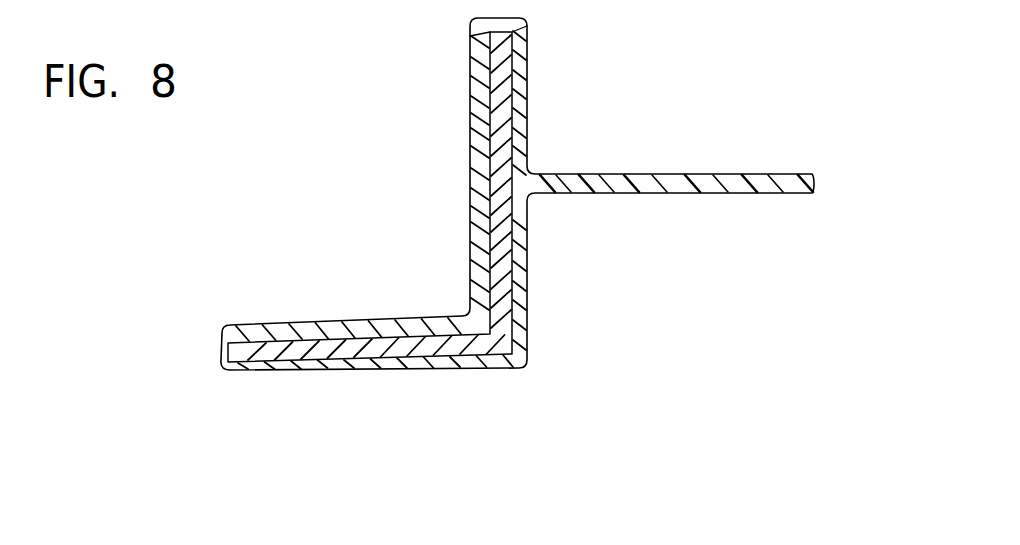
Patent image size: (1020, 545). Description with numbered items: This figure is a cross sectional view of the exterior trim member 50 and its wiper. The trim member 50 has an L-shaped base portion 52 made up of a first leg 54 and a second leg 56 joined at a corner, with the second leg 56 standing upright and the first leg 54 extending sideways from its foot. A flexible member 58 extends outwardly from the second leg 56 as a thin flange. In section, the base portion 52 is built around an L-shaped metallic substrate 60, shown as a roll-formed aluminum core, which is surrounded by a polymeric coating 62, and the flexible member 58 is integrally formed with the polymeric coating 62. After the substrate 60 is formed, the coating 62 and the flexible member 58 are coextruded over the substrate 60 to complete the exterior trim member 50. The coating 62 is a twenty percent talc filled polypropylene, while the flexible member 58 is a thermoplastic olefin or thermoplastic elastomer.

The trim member 50 is at (336, 194).
The L-shaped base portion 52 is at (486, 382).
The first leg 54 is at (323, 352).
The second leg 56 is at (530, 87).
The flexible member 58 is at (713, 195).
The L-shaped metallic substrate 60 is at (498, 130).
The polymeric coating 62 is at (525, 285).